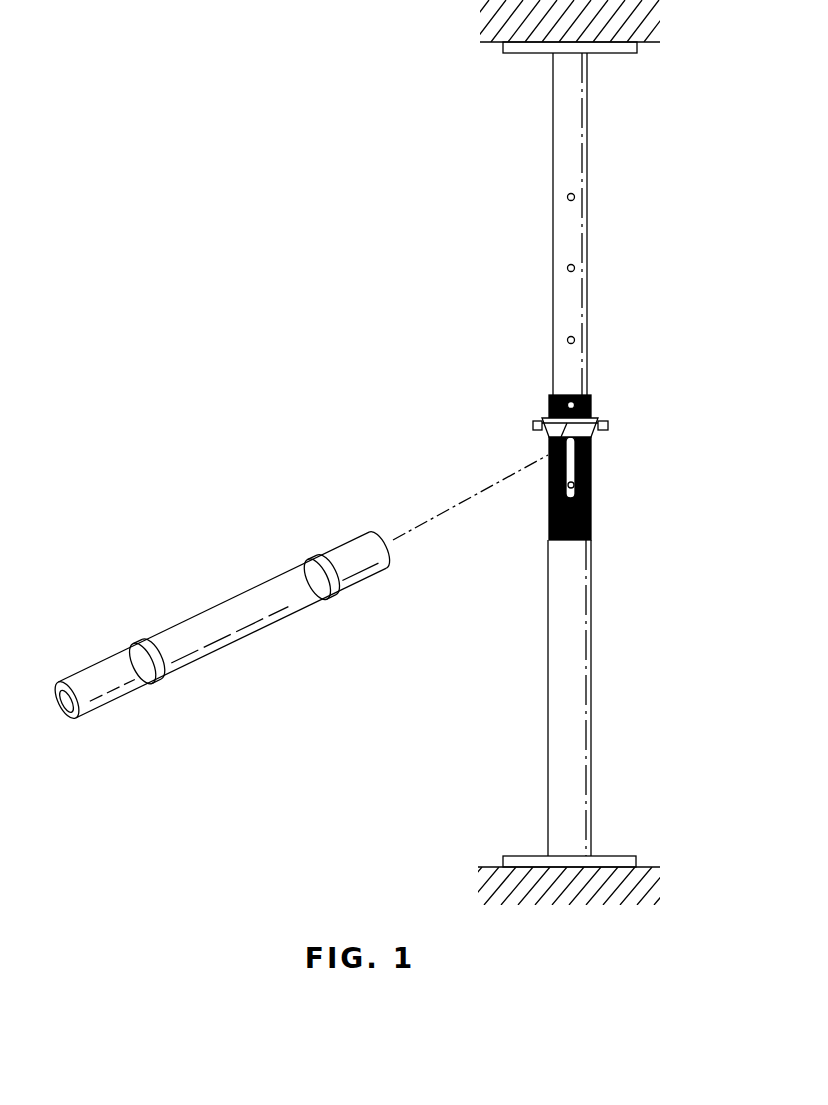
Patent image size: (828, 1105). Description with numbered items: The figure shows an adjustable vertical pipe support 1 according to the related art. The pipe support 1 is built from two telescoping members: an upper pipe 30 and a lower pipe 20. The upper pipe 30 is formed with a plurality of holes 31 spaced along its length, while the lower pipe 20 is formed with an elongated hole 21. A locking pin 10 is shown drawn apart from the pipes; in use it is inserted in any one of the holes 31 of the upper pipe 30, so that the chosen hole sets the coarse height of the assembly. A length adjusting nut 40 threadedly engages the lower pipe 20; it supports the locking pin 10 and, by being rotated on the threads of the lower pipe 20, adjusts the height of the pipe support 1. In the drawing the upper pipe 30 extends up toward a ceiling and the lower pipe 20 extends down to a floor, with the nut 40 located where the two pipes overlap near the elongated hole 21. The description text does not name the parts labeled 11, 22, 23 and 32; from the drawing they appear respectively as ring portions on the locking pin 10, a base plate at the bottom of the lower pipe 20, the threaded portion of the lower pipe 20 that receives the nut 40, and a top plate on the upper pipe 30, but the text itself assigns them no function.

The pipe support 1 is at (375, 192).
The locking pin 10 is at (230, 603).
The ring 11 is at (132, 647).
The lower pipe 20 is at (586, 647).
The elongated hole 21 is at (572, 470).
The base plate 22 is at (610, 858).
The threaded portion 23 is at (592, 523).
The upper pipe 30 is at (578, 312).
The holes 31 is at (567, 196).
The top plate 32 is at (613, 53).
The length adjusting nut 40 is at (548, 418).